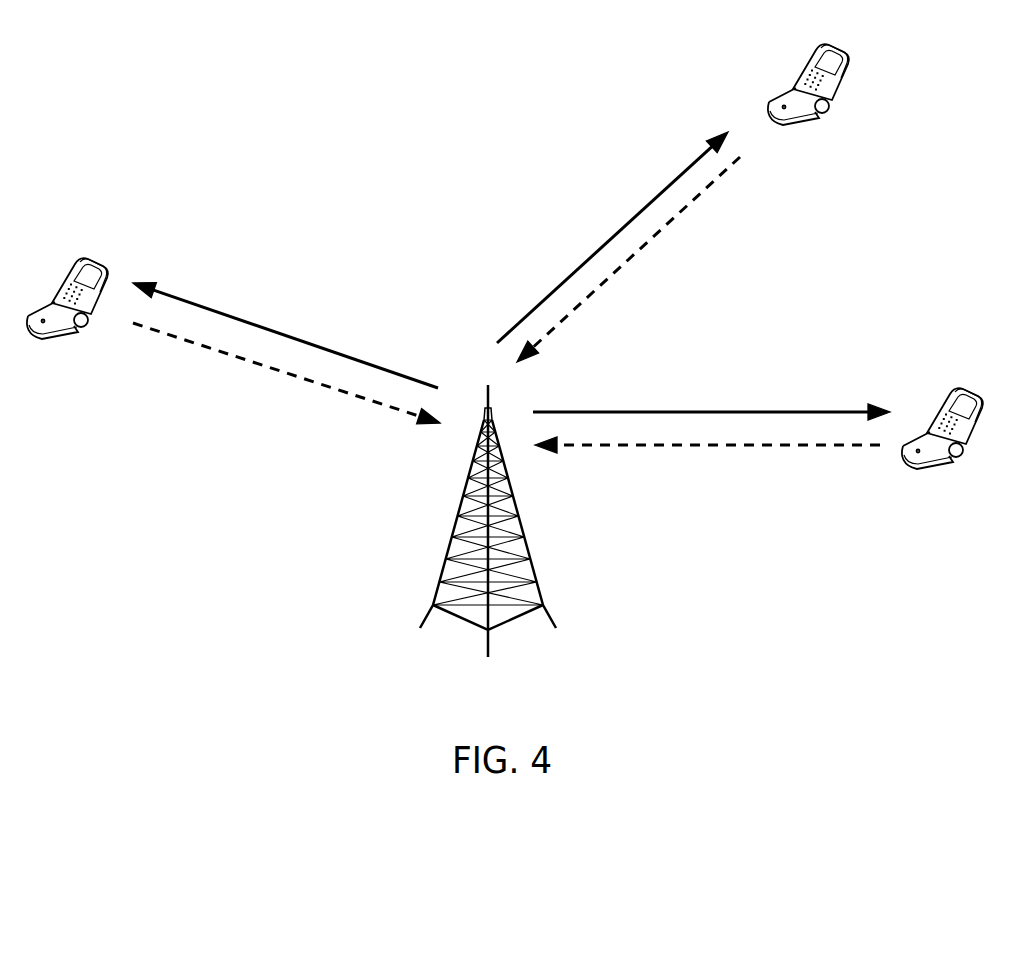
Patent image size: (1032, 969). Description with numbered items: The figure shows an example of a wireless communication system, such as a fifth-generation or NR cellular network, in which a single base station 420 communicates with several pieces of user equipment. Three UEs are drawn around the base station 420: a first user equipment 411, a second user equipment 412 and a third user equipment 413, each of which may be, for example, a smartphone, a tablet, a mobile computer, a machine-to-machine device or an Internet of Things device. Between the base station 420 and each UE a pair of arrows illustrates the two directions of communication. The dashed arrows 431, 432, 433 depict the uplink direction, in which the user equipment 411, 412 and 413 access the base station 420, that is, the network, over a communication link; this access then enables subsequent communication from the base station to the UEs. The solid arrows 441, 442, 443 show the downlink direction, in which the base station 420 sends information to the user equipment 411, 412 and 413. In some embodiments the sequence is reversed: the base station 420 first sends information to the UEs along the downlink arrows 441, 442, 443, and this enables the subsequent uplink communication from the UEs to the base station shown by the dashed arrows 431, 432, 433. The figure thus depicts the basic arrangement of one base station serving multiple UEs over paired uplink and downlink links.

The user equipment 411 is at (77, 338).
The user equipment 412 is at (950, 467).
The user equipment 413 is at (818, 123).
The base station 420 is at (543, 590).
The dashed arrow (uplink direction) 431 is at (322, 385).
The dashed arrow (uplink direction) 432 is at (673, 452).
The dashed arrow (uplink direction) 433 is at (653, 235).
The arrow (downlink direction) 441 is at (230, 317).
The arrow (downlink direction) 442 is at (808, 410).
The arrow (downlink direction) 443 is at (655, 195).